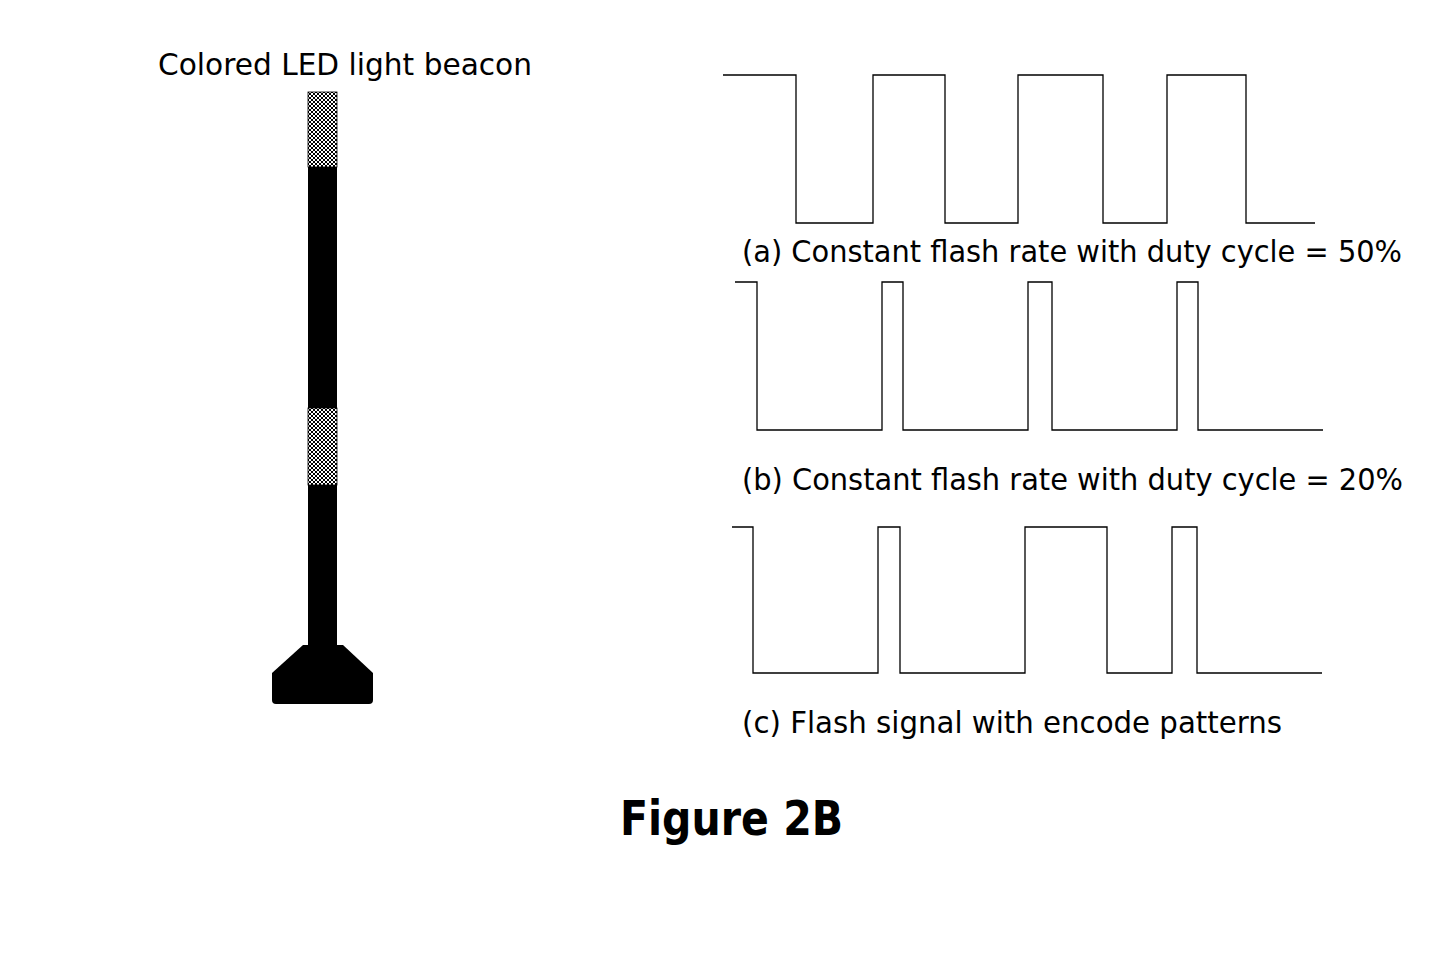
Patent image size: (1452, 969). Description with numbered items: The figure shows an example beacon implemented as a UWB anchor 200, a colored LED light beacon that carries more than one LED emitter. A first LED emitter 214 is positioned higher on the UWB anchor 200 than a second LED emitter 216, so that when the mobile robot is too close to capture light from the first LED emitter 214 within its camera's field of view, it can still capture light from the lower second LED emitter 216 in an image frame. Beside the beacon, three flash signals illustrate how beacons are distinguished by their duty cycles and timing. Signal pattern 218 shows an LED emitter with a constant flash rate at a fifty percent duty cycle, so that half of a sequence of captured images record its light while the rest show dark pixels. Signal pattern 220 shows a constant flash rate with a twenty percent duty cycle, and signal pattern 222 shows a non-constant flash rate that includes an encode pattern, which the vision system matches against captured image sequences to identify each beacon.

The UWB anchor 200 is at (278, 137).
The first LED emitter 214 is at (328, 150).
The second LED emitter 216 is at (332, 467).
The signal pattern 218 is at (1252, 110).
The signal pattern 220 is at (1203, 338).
The signal pattern 222 is at (1195, 563).